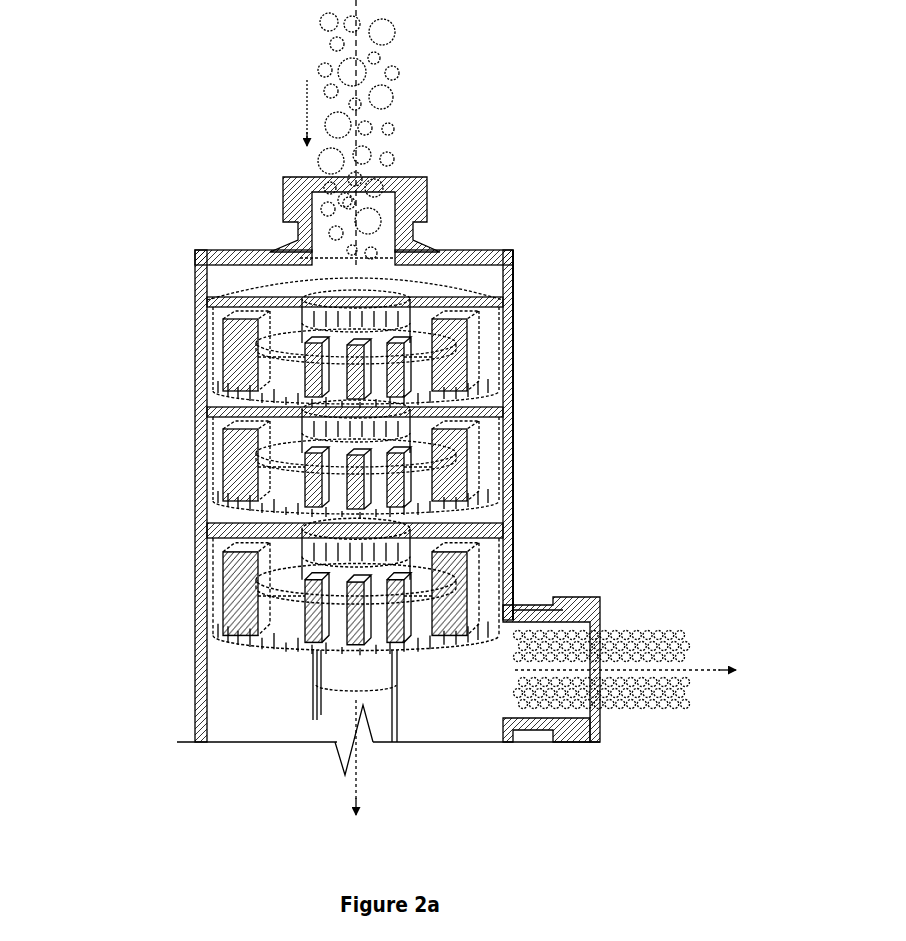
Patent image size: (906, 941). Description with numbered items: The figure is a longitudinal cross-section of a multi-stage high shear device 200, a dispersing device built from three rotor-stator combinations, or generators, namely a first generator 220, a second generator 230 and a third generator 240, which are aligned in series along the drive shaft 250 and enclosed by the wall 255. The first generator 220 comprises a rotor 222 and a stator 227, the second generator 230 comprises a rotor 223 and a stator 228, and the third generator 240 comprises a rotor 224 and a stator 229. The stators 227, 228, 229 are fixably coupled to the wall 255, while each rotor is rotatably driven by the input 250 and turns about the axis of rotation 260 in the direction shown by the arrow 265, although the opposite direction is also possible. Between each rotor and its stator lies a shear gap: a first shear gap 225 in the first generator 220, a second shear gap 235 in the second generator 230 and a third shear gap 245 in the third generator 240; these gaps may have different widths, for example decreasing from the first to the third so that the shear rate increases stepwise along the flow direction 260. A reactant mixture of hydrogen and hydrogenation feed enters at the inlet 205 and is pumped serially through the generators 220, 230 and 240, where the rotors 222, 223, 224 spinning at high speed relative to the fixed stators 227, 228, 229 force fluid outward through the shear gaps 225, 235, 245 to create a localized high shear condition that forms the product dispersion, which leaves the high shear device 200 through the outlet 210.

The high shear device 200 is at (140, 138).
The inlet 205 is at (396, 166).
The wall 255 is at (198, 262).
The first generator 220 is at (190, 300).
The stator 227 is at (490, 292).
The rotor 222 is at (500, 332).
The first shear gap 225 is at (470, 352).
The second generator 230 is at (190, 412).
The stator 228 is at (490, 405).
The rotor 223 is at (498, 447).
The second shear gap 235 is at (455, 452).
The third generator 240 is at (190, 525).
The stator 229 is at (482, 507).
The rotor 224 is at (506, 562).
The third shear gap 245 is at (483, 578).
The drive shaft 250 is at (318, 722).
The arrow 265 is at (434, 668).
The axis of rotation 260 is at (352, 788).
The outlet 210 is at (696, 676).